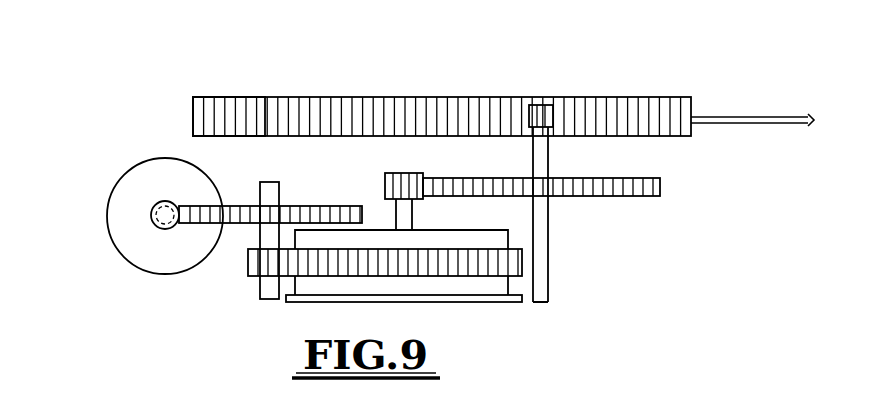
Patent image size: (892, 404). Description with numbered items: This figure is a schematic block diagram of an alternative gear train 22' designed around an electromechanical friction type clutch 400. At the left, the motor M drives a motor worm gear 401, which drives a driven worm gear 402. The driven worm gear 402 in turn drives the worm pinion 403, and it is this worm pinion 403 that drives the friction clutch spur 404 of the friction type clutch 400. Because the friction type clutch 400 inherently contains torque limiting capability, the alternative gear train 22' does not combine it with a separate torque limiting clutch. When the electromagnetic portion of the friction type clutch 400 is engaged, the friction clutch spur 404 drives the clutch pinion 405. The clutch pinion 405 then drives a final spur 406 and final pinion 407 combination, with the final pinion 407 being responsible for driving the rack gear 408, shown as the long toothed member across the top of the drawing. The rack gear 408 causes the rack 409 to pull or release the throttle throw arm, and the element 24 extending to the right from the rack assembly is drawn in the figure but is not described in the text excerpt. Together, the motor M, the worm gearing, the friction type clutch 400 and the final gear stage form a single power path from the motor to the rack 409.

The motor M is at (107, 212).
The motor worm gear 401 is at (162, 202).
The driven worm gear 402 is at (301, 205).
The worm pinion 403 is at (247, 261).
The friction type clutch 400 is at (358, 303).
The friction clutch spur 404 is at (522, 259).
The clutch pinion 405 is at (385, 189).
The final spur 406 is at (660, 188).
The final pinion 407 is at (545, 103).
The rack gear 408 is at (216, 103).
The rack 409 is at (364, 100).
The rod 24 is at (753, 113).
The alternative gear train 22' is at (161, 324).